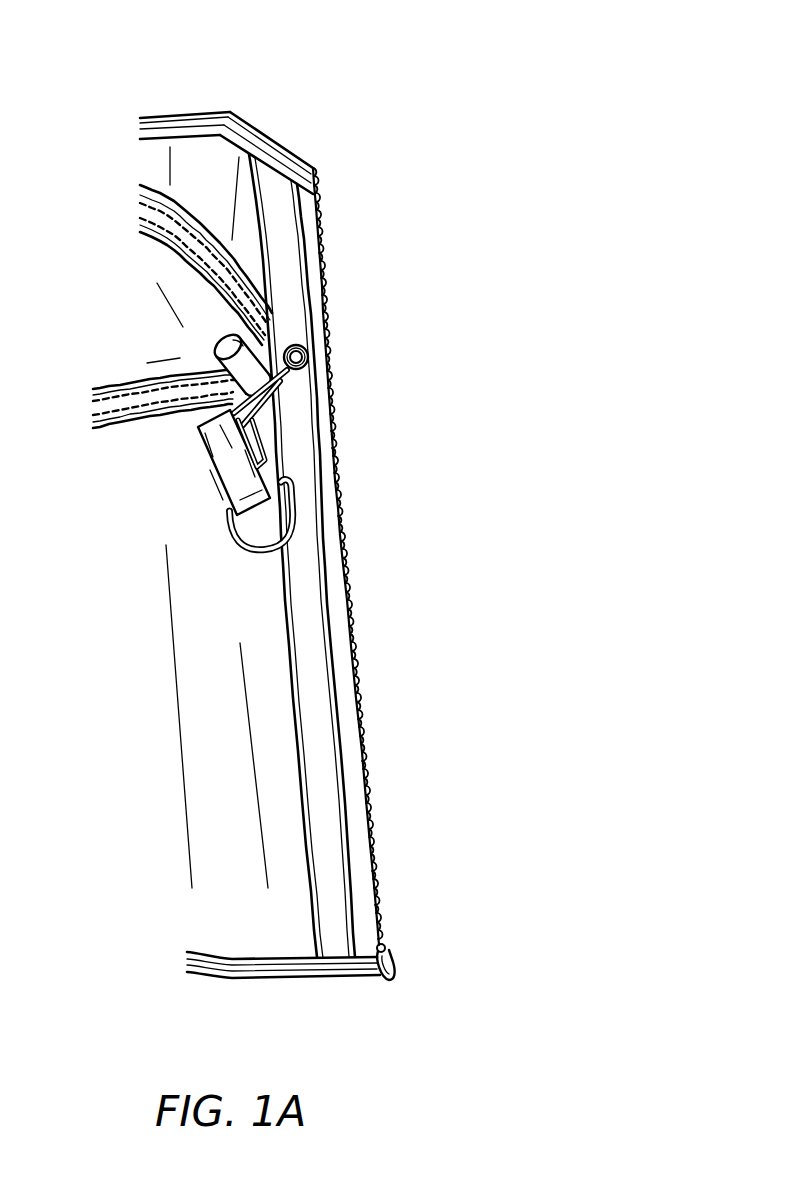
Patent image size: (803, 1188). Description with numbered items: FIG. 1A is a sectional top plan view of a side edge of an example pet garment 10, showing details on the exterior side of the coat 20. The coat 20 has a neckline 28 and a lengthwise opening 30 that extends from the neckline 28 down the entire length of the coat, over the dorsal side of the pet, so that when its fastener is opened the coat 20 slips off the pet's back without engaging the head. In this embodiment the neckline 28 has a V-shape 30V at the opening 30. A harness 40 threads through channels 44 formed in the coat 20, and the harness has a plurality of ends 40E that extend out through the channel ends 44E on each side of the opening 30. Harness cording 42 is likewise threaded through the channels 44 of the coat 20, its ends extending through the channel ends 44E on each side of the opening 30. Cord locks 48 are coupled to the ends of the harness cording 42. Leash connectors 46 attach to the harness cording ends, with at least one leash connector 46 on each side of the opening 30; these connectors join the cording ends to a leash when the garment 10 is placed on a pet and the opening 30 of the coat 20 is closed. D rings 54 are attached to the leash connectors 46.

The garment 10 is at (393, 132).
The coat 20 is at (212, 88).
The neckline 28 is at (162, 128).
The lengthwise opening 30 is at (365, 274).
The V-shape 30V is at (277, 138).
The harness 40 is at (142, 210).
The harness ends 40E is at (243, 420).
The harness cording 42 is at (302, 378).
The channels 44 is at (188, 212).
The channel ends 44E is at (303, 346).
The leash connector 46 is at (182, 499).
The cord lock 48 is at (213, 343).
The D ring 54 is at (252, 552).